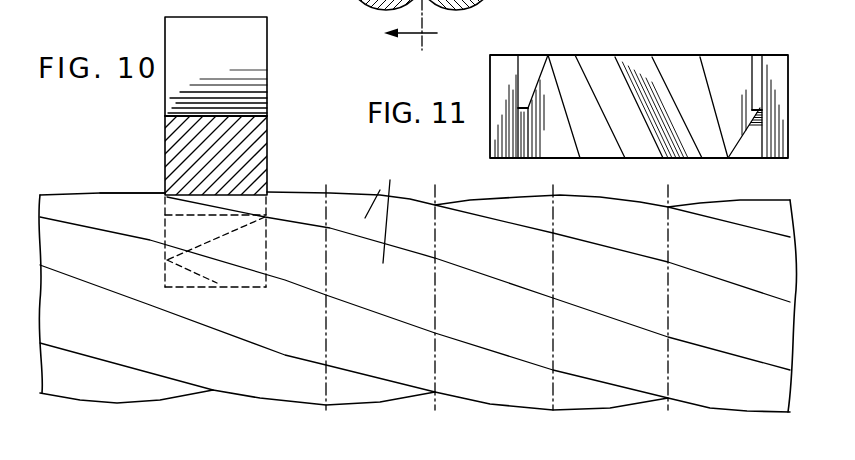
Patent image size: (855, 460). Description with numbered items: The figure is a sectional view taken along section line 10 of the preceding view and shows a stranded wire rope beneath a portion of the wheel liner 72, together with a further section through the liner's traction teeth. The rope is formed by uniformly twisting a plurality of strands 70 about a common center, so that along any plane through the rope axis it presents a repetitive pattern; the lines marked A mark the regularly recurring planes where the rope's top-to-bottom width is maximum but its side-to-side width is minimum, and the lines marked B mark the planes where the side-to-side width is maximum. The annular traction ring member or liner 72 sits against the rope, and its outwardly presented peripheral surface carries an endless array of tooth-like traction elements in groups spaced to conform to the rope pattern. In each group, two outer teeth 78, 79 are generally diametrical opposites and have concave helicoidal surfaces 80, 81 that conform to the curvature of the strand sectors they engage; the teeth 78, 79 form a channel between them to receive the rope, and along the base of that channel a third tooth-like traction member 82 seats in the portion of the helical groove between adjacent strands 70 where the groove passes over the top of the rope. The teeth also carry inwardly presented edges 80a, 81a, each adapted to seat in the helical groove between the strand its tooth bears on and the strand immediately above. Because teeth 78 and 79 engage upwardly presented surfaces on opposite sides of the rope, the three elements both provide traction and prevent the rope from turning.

In FIG. 10, the section line 10— 10 is at (422, 34).
In FIG. 10, the strands 70 is at (477, 203).
In FIG. 10, the annular traction ring member or liner 72 is at (250, 152).
In FIG. 11, the outer tooth 78 is at (527, 65).
In FIG. 10, the outer tooth 79 is at (267, 268).
In FIG. 11, the outer tooth 79 is at (758, 68).
In FIG. 11, the concave helicoidal surface 80 is at (550, 137).
In FIG. 11, the inwardly presented edge 80a is at (562, 92).
In FIG. 10, the concave helicoidal surface 81 is at (223, 267).
In FIG. 11, the concave helicoidal surface 81 is at (723, 87).
In FIG. 10, the inwardly presented edge 81a is at (225, 233).
In FIG. 11, the inwardly presented edge 81a is at (707, 88).
In FIG. 10, the third tooth-like traction member 82 is at (157, 205).
In FIG. 11, the third tooth-like traction member 82 is at (653, 130).